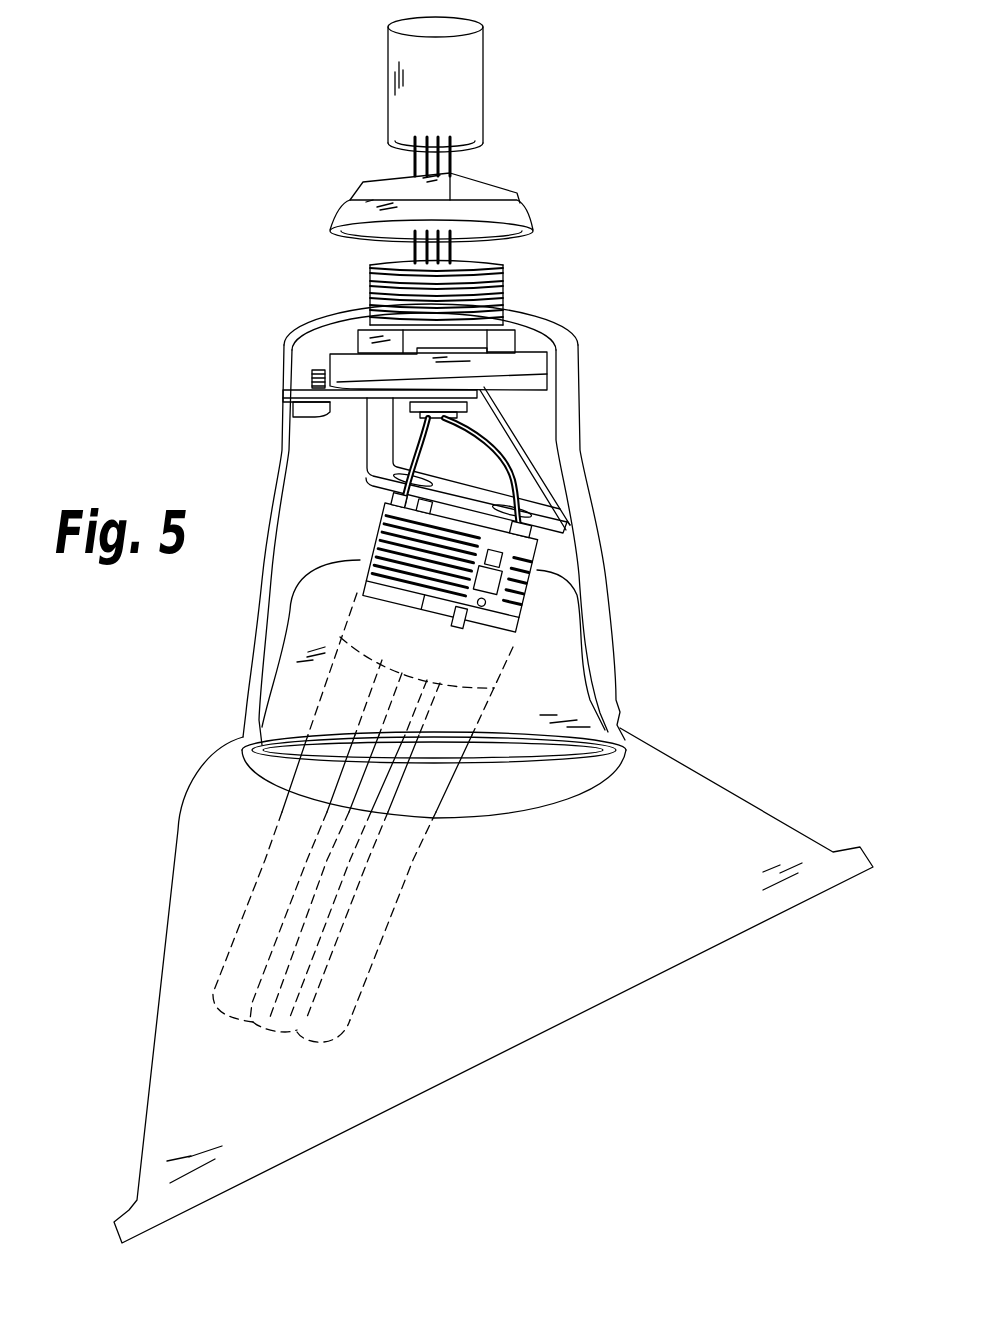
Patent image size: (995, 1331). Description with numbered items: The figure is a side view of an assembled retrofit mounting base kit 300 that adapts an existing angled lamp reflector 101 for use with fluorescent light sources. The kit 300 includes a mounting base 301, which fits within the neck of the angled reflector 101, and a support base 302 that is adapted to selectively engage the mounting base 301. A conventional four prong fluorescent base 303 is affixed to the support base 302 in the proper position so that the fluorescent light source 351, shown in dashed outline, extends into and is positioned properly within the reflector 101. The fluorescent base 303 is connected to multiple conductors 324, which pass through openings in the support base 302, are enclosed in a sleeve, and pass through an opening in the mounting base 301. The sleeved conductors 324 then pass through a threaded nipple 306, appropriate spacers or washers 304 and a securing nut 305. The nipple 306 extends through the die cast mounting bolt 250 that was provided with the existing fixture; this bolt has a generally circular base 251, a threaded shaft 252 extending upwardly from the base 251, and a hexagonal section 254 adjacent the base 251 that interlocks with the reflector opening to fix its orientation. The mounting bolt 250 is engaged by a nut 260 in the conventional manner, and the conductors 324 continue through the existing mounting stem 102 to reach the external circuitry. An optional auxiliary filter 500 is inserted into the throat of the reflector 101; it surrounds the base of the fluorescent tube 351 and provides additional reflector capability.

The angled lamp reflector 101 is at (213, 824).
The mounting stem 102 is at (455, 91).
The die cast mounting bolt 250 is at (457, 326).
The base 251 is at (525, 360).
The threaded shaft 252 is at (380, 283).
The hexagonal section 254 is at (500, 334).
The nut 260 is at (520, 222).
The retrofit mounting base kit 300 is at (647, 560).
The mounting base 301 is at (515, 436).
The support base 302 is at (390, 443).
The four prong fluorescent base 303 is at (443, 623).
The spacers or washers 304 is at (487, 392).
The securing nut 305 is at (467, 409).
The threaded nipple 306 is at (300, 415).
The conductors 324 is at (457, 452).
The fluorescent light source 351 is at (250, 922).
The auxiliary filter 500 is at (553, 635).